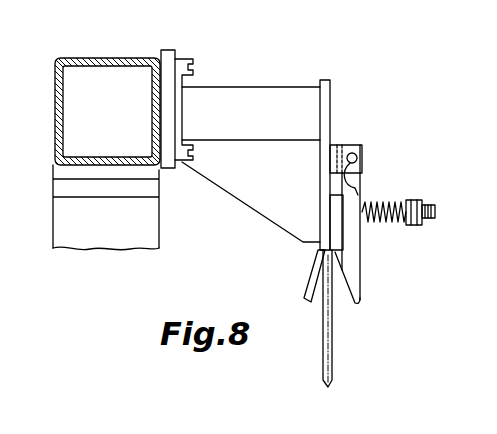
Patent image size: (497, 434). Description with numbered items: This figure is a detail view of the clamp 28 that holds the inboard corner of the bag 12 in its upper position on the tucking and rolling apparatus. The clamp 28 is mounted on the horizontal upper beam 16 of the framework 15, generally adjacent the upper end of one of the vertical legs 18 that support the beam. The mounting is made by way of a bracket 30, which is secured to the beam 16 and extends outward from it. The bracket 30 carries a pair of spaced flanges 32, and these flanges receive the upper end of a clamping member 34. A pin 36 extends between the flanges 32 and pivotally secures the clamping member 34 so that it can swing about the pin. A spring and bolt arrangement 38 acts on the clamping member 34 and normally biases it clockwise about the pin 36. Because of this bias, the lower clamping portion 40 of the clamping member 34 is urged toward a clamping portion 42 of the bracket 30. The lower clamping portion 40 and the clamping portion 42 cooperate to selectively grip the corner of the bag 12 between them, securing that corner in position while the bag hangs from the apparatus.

The bag 12 is at (338, 309).
The framework 15 is at (57, 55).
The horizontal upper beam 16 is at (134, 59).
The vertical legs 18 is at (67, 205).
The clamp 28 is at (385, 133).
The bracket 30 is at (243, 95).
The spaced flanges 32 is at (360, 168).
The clamping member 34 is at (350, 200).
The pin 36 is at (343, 160).
The spring and bolt arrangement 38 is at (379, 230).
The lower clamping portion 40 is at (335, 267).
The clamping portion 42 is at (320, 265).